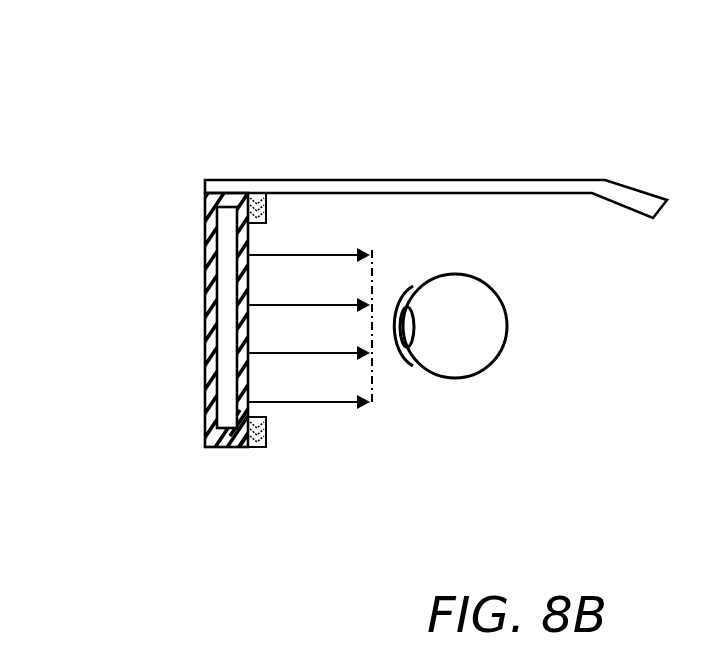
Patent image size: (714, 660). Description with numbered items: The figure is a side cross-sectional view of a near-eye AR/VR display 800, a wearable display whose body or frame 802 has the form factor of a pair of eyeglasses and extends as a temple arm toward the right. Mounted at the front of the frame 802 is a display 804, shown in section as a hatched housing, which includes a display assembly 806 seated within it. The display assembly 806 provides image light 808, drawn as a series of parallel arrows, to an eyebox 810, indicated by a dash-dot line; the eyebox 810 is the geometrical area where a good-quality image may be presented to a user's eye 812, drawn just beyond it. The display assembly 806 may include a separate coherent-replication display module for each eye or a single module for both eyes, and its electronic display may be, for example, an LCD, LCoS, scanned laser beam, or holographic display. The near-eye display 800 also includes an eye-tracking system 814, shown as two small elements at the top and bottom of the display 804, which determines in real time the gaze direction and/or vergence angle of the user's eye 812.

The near-eye AR/VR display 800 is at (436, 125).
The frame 802 is at (561, 183).
The display 804 is at (204, 210).
The display assembly 806 is at (230, 293).
The image light 808 is at (329, 428).
The eyebox 810 is at (372, 392).
The user's eye 812 is at (492, 338).
The eye-tracking system 814 is at (266, 199).